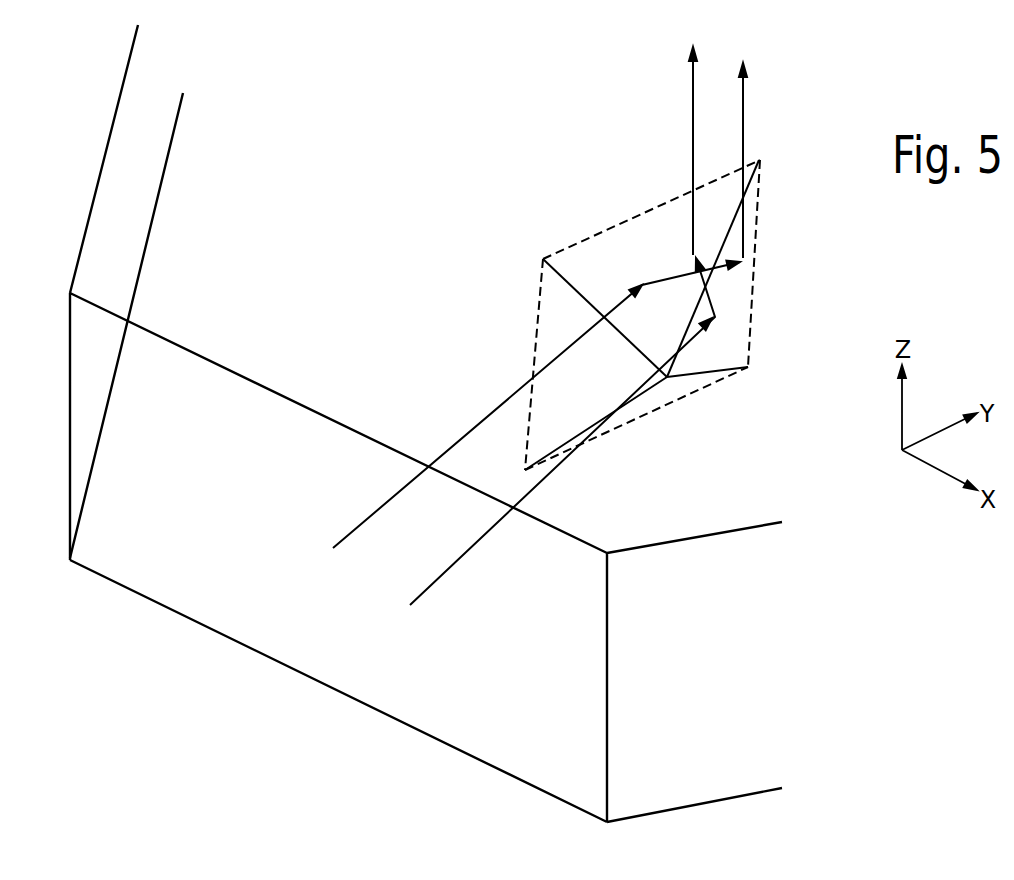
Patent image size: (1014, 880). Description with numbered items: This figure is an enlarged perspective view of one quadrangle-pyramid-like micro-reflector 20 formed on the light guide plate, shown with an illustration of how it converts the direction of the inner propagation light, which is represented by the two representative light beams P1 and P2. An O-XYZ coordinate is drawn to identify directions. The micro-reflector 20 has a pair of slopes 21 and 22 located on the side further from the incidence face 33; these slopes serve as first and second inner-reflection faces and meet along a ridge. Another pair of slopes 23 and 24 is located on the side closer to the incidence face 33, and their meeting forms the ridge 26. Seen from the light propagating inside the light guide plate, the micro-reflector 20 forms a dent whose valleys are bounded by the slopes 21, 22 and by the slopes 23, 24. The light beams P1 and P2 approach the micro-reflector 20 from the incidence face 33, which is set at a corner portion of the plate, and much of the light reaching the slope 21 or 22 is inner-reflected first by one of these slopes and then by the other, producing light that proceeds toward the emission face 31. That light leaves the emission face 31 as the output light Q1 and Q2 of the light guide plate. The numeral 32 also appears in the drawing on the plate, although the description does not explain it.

The micro-reflector 20 is at (596, 315).
The slope 21 is at (632, 230).
The slope 22 is at (722, 358).
The slope 23 is at (542, 338).
The slope 24 is at (650, 405).
The ridge 26 is at (560, 449).
The emission face 31 is at (393, 143).
The bottom edge surface of block 32 is at (448, 698).
The incidence face 33 is at (308, 637).
The representative light beam P1 is at (357, 525).
The representative light beam P2 is at (435, 583).
The output light Q1 is at (741, 147).
The output light Q2 is at (692, 137).